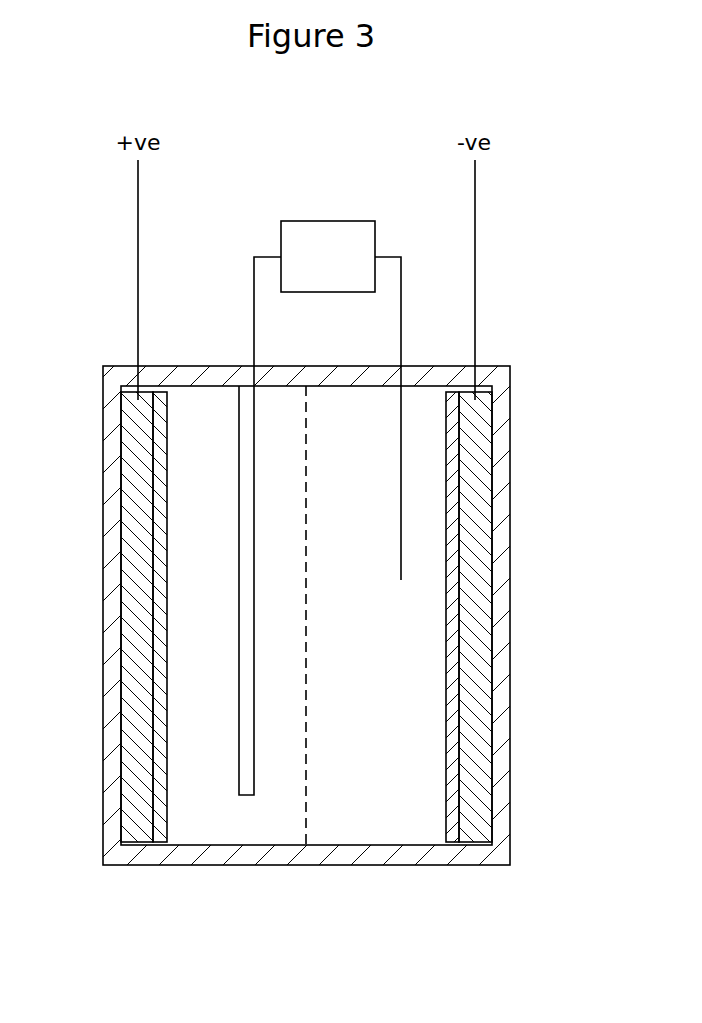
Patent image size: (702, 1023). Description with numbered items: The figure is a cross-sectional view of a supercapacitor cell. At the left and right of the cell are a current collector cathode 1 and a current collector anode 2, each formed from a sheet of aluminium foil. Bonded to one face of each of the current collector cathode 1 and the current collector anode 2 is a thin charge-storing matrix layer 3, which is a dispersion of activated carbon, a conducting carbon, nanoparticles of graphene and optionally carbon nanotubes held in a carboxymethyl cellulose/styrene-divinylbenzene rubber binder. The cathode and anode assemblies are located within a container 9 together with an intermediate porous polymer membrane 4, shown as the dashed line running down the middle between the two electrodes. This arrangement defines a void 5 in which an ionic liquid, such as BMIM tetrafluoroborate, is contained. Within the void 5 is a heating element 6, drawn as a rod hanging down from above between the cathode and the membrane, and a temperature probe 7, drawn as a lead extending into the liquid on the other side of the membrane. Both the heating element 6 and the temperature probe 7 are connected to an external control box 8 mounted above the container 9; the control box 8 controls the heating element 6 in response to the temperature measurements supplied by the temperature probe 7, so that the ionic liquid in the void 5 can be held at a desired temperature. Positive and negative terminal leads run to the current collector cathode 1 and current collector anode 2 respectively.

The current collector cathode 1 is at (133, 830).
The current collector anode 2 is at (478, 830).
The charge-storing matrix layer 3 is at (165, 812).
The porous polymer membrane 4 is at (305, 442).
The void 5 is at (405, 688).
The heating element 6 is at (239, 526).
The temperature probe 7 is at (400, 495).
The external control box 8 is at (320, 221).
The container 9 is at (505, 618).